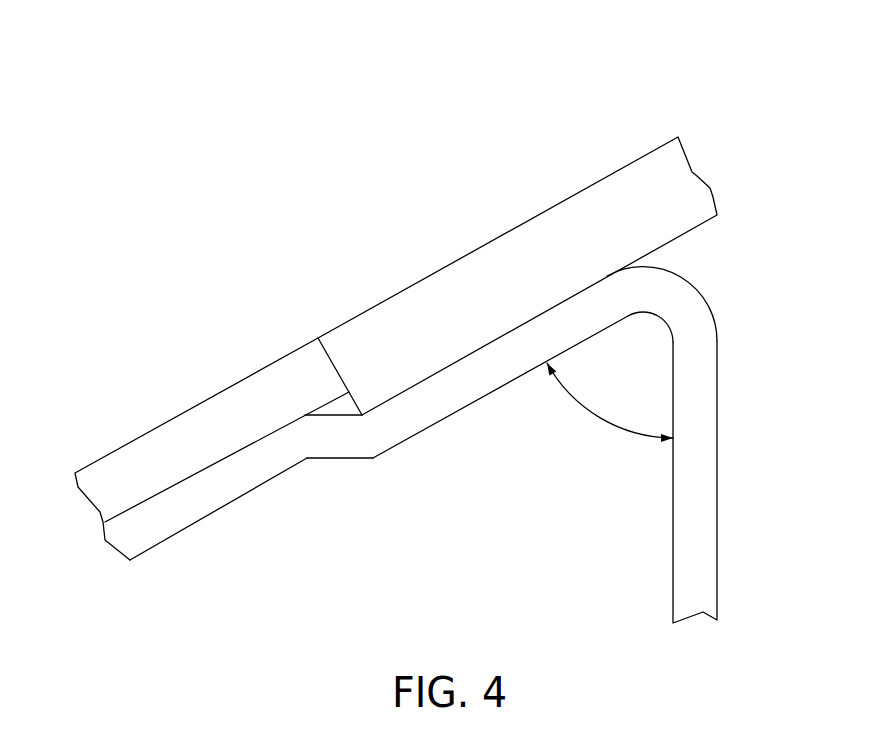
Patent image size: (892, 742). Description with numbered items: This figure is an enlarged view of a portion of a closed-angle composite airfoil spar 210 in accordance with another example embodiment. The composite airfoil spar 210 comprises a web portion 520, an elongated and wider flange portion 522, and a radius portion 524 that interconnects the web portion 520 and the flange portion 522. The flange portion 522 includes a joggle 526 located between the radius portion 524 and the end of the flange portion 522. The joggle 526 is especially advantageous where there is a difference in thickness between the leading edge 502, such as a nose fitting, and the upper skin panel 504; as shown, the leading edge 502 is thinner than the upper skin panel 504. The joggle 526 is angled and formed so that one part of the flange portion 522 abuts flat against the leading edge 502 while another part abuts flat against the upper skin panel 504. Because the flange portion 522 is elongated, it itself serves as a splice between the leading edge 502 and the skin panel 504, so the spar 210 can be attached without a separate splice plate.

The composite airfoil spar 210 is at (175, 188).
The leading edge 502 is at (160, 430).
The upper skin panel 504 is at (448, 272).
The web portion 520 is at (713, 518).
The flange portion 522 is at (215, 503).
The radius portion 524 is at (700, 298).
The joggle 526 is at (337, 450).